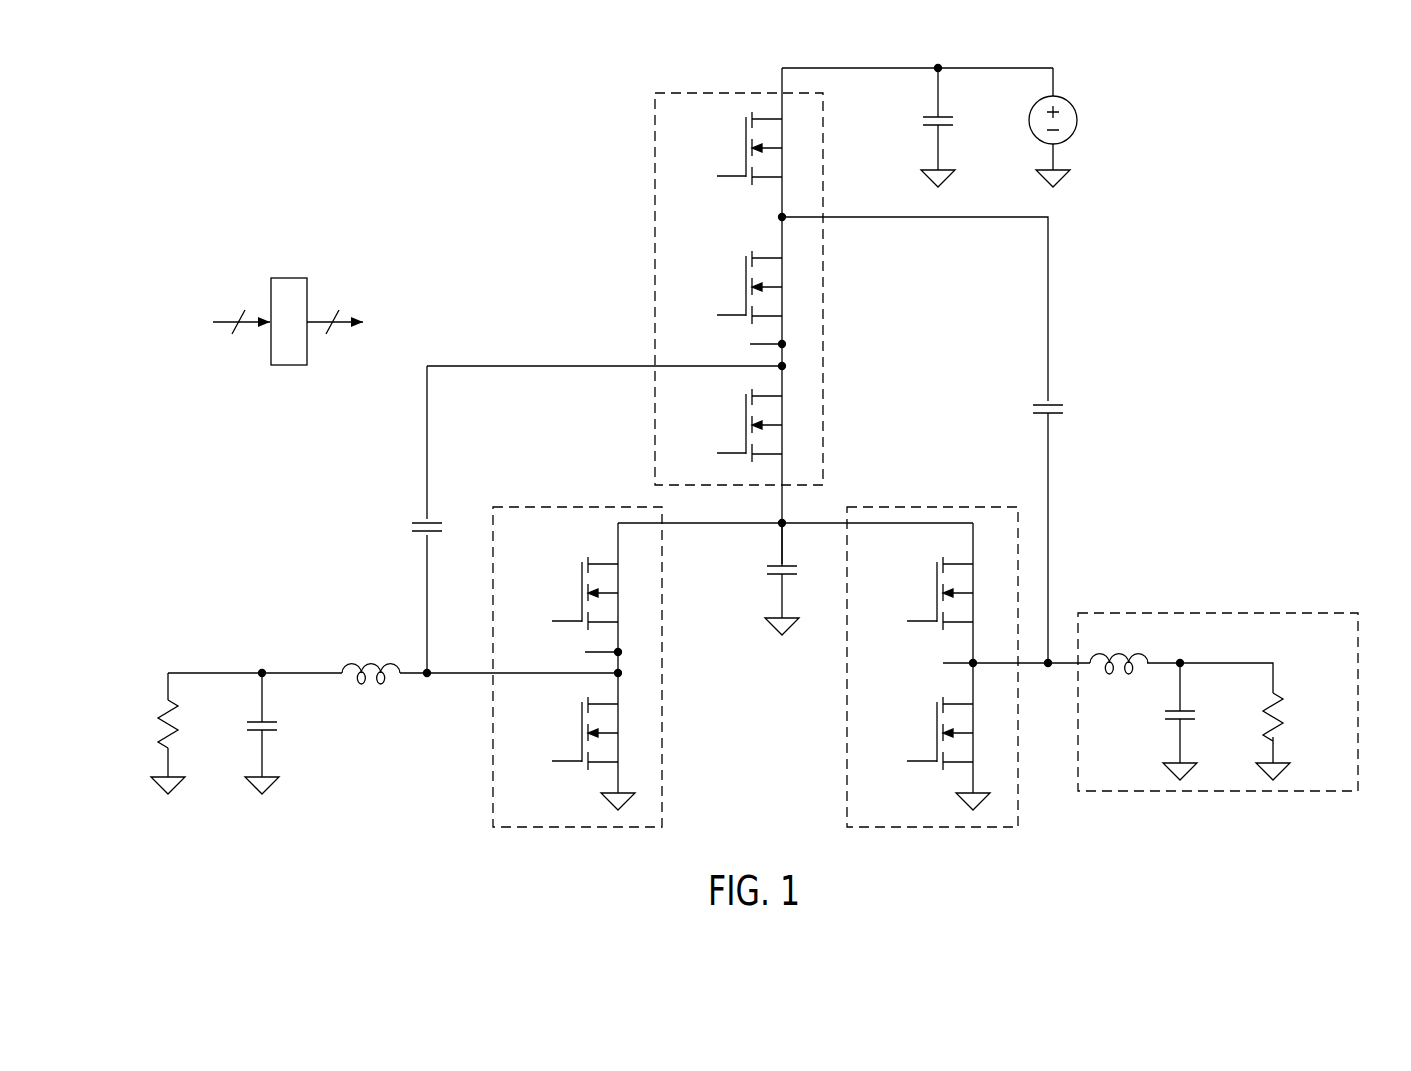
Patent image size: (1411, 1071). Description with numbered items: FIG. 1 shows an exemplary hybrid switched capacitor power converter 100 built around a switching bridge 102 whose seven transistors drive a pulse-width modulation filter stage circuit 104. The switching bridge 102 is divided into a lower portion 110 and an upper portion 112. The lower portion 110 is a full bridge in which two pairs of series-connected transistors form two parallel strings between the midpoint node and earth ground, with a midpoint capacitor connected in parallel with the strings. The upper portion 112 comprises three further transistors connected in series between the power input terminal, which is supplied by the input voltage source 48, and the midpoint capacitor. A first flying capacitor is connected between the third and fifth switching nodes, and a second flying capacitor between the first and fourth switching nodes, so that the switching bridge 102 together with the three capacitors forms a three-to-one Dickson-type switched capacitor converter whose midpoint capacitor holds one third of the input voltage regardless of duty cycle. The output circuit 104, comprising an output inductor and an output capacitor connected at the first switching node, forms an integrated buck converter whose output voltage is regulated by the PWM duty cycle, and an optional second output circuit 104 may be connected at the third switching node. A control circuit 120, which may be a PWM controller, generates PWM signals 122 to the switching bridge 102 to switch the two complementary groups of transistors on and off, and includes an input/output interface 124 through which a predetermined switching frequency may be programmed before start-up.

The hybrid switched power converter 100 is at (329, 112).
The switching bridge 102 is at (851, 340).
The PWM filter stage circuit 104 is at (199, 627).
The lower portion 110 is at (578, 507).
The upper portion 112 is at (741, 92).
The control circuit 120 is at (290, 278).
The PWM signals 122 is at (340, 327).
The input/output (I/O) interface 124 is at (230, 320).
The input voltage source VIN 48 is at (1062, 126).